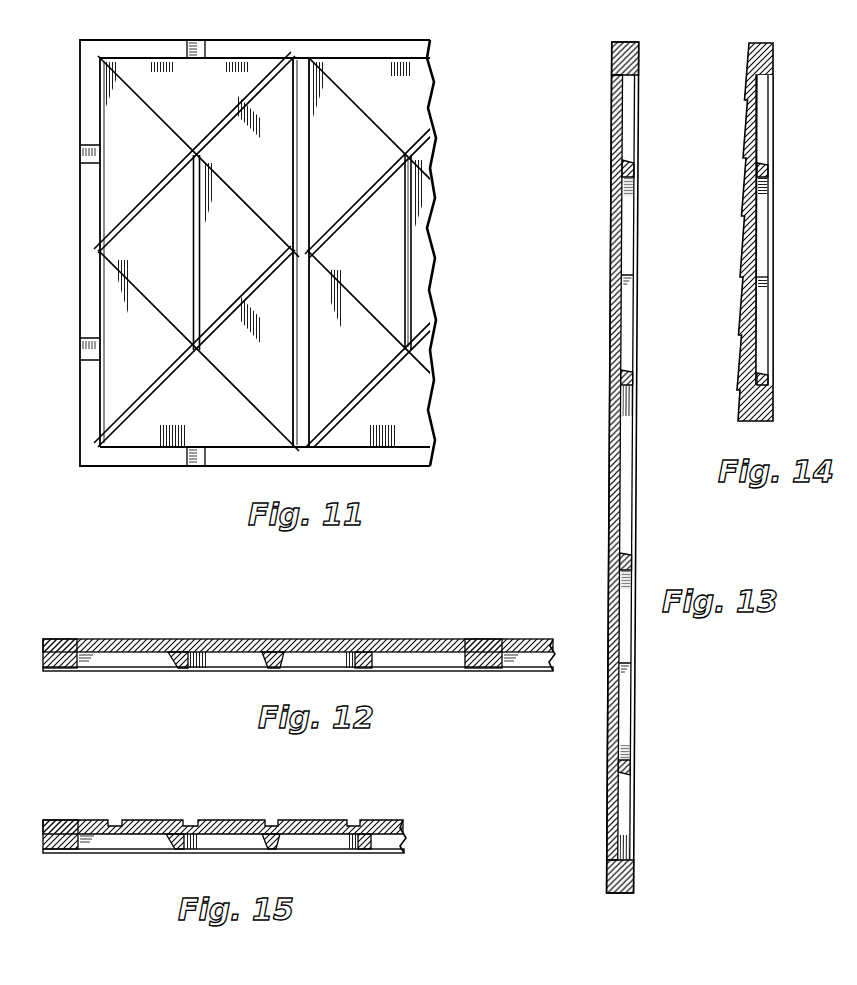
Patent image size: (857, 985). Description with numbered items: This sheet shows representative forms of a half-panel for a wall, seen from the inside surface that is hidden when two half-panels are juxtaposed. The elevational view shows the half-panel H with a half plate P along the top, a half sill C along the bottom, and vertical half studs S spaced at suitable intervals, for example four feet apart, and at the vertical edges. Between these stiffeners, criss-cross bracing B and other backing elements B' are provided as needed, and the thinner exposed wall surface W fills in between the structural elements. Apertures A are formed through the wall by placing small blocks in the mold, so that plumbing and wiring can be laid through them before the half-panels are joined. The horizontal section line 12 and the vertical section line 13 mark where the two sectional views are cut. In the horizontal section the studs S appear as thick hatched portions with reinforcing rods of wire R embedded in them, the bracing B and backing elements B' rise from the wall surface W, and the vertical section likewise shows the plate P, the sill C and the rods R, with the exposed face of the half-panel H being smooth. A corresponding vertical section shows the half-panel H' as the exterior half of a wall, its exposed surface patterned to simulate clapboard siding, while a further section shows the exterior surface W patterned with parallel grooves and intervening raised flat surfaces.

In FIG. 11, the half plate P is at (364, 49).
In FIG. 13, the half plate P is at (639, 75).
In FIG. 14, the half plate P is at (773, 74).
In FIG. 11, the aperture A is at (82, 152).
In FIG. 11, the exposed wall surface W is at (152, 174).
In FIG. 12, the exposed wall surface W is at (403, 640).
In FIG. 15, the exposed wall surface W is at (318, 819).
In FIG. 14, the exposed wall surface W is at (768, 320).
In FIG. 11, the vertical half stud S is at (82, 299).
In FIG. 12, the vertical half stud S is at (50, 672).
In FIG. 15, the vertical half stud S is at (52, 855).
In FIG. 13, the vertical half stud S is at (623, 467).
In FIG. 14, the vertical half stud S is at (764, 230).
In FIG. 11, the half-panel H is at (52, 392).
In FIG. 12, the half-panel H is at (232, 614).
In FIG. 13, the half-panel H is at (578, 448).
In FIG. 15, the half-panel (clapboard-patterned) H' is at (216, 782).
In FIG. 14, the half-panel (clapboard-patterned) H' is at (708, 235).
In FIG. 11, the criss-cross bracing B is at (409, 254).
In FIG. 12, the criss-cross bracing B is at (270, 678).
In FIG. 15, the criss-cross bracing B is at (253, 862).
In FIG. 14, the criss-cross bracing B is at (784, 274).
In FIG. 11, the backing element B' is at (196, 251).
In FIG. 12, the backing element B' is at (262, 678).
In FIG. 15, the backing element B' is at (283, 859).
In FIG. 11, the half sill C is at (415, 464).
In FIG. 13, the half sill C is at (608, 894).
In FIG. 12, the reinforcing rods of wire R is at (58, 646).
In FIG. 15, the reinforcing rods of wire R is at (60, 821).
In FIG. 14, the reinforcing rods of wire R is at (775, 58).
In FIG. 11, the section line 12— 12 is at (352, 205).
In FIG. 11, the section line 13— 13 is at (150, 505).